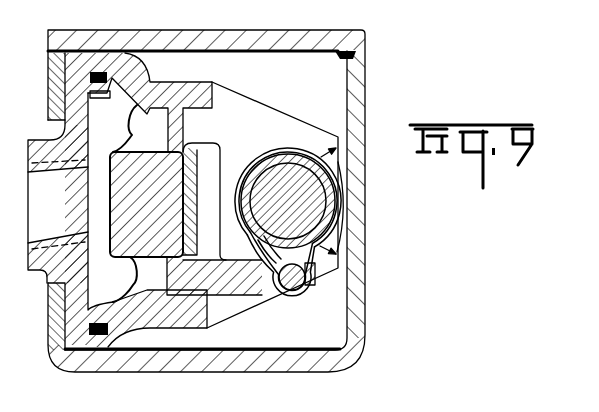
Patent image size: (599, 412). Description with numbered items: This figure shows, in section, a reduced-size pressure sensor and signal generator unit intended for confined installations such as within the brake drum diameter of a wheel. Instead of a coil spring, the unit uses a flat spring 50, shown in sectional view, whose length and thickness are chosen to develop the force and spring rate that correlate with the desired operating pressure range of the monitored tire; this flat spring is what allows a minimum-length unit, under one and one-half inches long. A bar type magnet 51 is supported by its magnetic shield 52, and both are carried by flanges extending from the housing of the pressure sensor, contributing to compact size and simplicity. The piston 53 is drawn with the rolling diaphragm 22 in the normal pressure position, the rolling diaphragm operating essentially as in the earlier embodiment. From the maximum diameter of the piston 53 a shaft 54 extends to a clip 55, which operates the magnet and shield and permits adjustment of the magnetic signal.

The rolling diaphragm 22 is at (133, 124).
The flat spring 50 is at (207, 164).
The bar type magnet 51 is at (302, 158).
The magnetic shield 52 is at (269, 153).
The piston 53 is at (152, 154).
The shaft 54 is at (233, 297).
The clip 55 is at (295, 293).